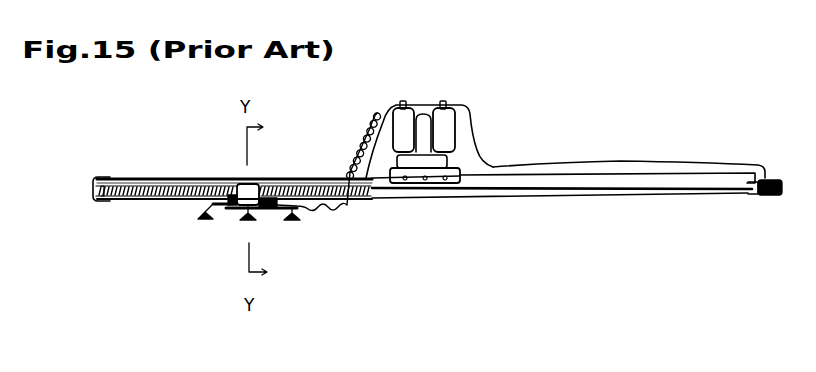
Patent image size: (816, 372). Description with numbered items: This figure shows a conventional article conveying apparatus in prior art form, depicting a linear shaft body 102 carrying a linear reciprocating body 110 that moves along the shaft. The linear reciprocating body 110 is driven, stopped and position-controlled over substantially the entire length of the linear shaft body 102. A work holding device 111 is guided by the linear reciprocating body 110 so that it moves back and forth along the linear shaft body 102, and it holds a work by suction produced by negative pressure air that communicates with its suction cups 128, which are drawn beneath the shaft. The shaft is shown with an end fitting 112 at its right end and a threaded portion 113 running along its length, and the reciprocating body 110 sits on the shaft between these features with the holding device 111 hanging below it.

The linear shaft body 102 is at (113, 177).
The linear reciprocating body 110 is at (249, 196).
The work holding device 111 is at (281, 206).
The end cap 112 is at (770, 197).
The feed screw 113 is at (161, 198).
The suction cups 128 is at (204, 220).